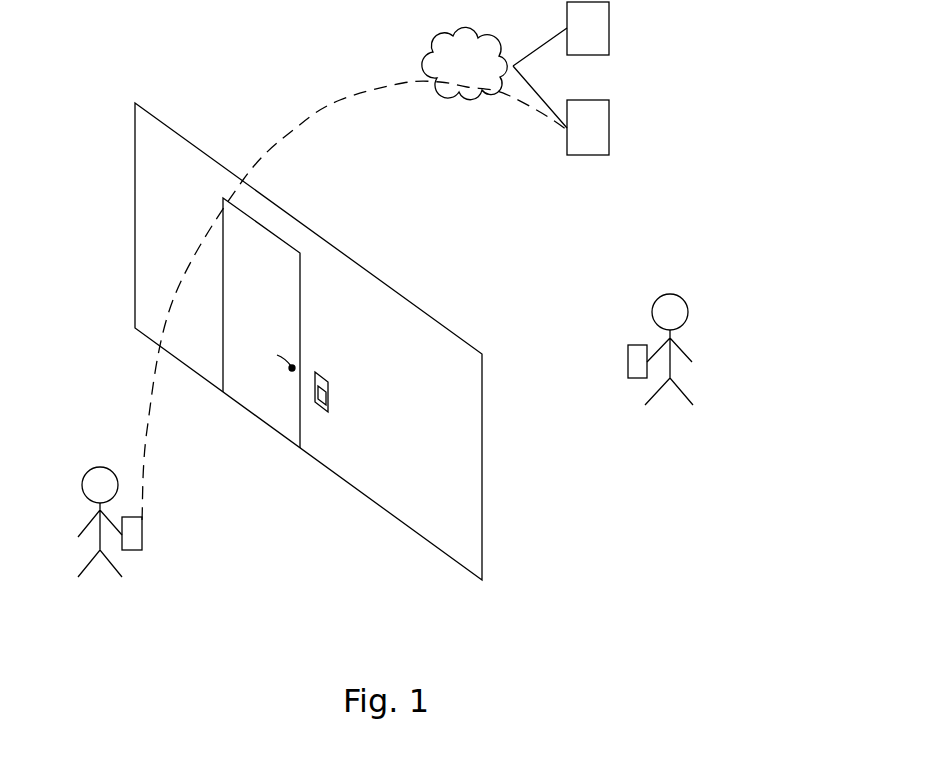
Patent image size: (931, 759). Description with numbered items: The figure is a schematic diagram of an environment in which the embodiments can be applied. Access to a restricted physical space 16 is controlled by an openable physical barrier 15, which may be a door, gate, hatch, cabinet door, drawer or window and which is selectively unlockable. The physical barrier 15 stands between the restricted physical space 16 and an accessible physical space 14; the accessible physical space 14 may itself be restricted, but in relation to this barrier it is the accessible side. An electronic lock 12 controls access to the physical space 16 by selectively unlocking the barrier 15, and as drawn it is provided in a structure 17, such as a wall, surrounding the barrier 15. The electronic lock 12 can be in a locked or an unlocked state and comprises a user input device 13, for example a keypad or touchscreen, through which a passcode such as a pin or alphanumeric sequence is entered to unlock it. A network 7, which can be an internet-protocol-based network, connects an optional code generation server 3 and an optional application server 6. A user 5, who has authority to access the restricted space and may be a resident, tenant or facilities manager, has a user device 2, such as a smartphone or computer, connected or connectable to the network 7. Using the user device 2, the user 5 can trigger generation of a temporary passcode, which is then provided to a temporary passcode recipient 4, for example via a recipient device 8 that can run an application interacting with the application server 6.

The user device 2 is at (638, 378).
The code generation server 3 is at (596, 42).
The temporary passcode recipient 4 is at (82, 487).
The user 5 is at (688, 310).
The application server 6 is at (596, 140).
The network 7 is at (475, 76).
The recipient device 8 is at (132, 550).
The electronic lock 12 is at (328, 375).
The user input device 13 is at (328, 399).
The accessible physical space 14 is at (83, 316).
The physical barrier 15 is at (281, 316).
The restricted physical space 16 is at (408, 196).
The structure 17 is at (443, 490).